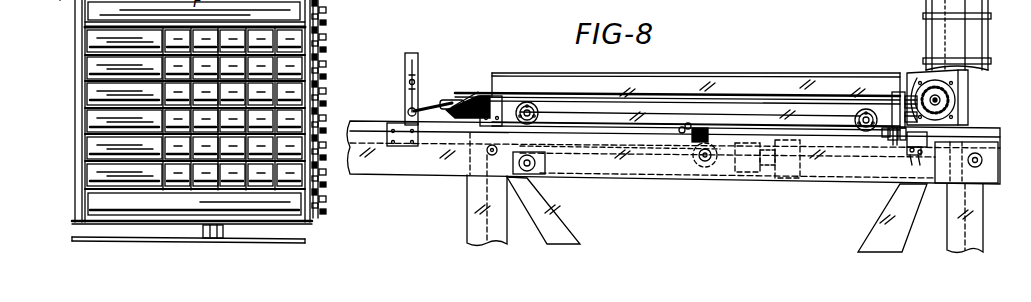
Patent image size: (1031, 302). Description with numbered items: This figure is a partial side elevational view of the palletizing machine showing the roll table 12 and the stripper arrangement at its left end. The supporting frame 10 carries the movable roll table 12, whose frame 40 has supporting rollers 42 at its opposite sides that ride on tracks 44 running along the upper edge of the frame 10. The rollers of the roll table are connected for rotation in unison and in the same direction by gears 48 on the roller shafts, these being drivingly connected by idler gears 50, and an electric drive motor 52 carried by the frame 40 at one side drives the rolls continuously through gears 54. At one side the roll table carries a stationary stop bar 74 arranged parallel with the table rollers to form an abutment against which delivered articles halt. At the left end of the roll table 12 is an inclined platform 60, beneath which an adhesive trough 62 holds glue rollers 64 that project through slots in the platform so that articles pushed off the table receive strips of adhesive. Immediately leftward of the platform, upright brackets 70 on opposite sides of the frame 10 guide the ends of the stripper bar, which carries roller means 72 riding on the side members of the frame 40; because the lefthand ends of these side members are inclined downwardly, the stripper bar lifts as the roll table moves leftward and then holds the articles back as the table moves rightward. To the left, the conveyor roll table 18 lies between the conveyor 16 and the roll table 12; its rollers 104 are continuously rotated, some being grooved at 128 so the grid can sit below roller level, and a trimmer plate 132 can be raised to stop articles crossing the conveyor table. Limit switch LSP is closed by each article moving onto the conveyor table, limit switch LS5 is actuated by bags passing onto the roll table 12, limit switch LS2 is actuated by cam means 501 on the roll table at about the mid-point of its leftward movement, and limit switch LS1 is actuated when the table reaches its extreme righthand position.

The supporting frame 10 is at (994, 134).
The roll table 12 is at (799, 112).
The conveyor 16 is at (306, 241).
The conveyor roll table 18 is at (68, 84).
The frame 40 is at (753, 107).
The supporting rollers 42 is at (540, 106).
The tracks 44 is at (573, 127).
The gears 48 is at (908, 73).
The idler gears 50 is at (908, 136).
The cam means 501 is at (892, 132).
The electric drive motor 52 is at (934, 27).
The gears 54 is at (922, 92).
The inclined platform 60 is at (434, 110).
The adhesive trough 62 is at (466, 101).
The glue rollers 64 is at (453, 108).
The upright brackets 70 is at (403, 61).
The roller means 72 is at (427, 104).
The stationary stop bar 74 is at (712, 79).
The rollers 104 is at (95, 11).
The grooves 128 is at (165, 95).
The trimmer plate 132 is at (322, 26).
The limit switch LS1 is at (922, 137).
The limit switch LS2 is at (702, 135).
The limit switch LS5 is at (253, 2).
The limit switch LSP is at (250, 233).